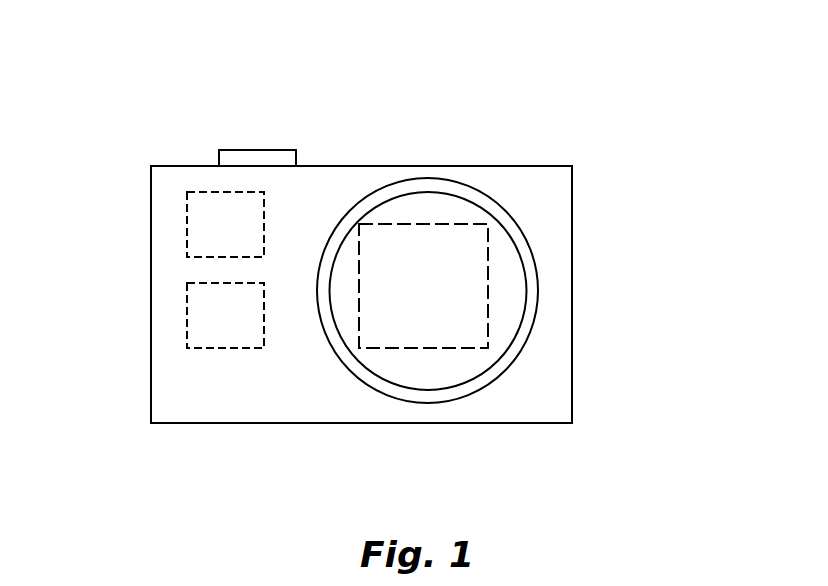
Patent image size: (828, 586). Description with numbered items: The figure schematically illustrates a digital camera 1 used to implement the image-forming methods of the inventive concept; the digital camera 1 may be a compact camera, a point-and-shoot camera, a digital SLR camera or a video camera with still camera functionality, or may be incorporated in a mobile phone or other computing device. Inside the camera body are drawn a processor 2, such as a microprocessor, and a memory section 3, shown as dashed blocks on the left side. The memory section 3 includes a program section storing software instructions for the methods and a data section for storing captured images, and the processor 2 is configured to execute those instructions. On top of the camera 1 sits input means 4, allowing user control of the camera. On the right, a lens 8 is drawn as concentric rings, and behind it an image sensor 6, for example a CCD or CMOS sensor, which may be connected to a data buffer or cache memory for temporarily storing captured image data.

The digital camera 1 is at (135, 95).
The processor 2 is at (188, 223).
The memory section 3 is at (188, 313).
The input means 4 is at (250, 152).
The image sensor 6 is at (485, 272).
The lens 8 is at (525, 308).